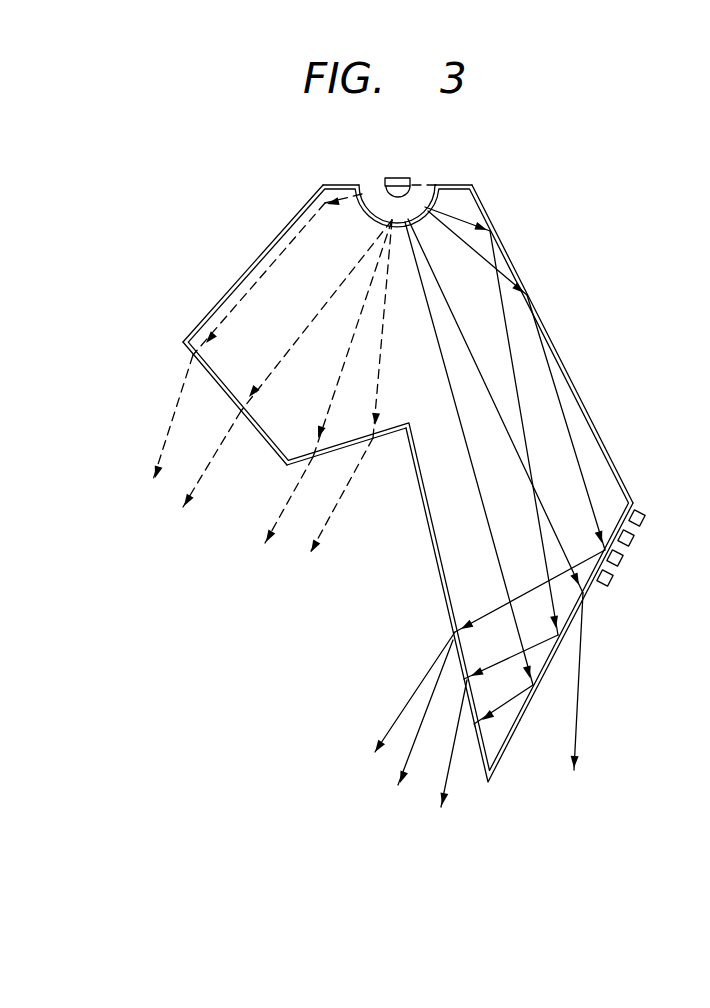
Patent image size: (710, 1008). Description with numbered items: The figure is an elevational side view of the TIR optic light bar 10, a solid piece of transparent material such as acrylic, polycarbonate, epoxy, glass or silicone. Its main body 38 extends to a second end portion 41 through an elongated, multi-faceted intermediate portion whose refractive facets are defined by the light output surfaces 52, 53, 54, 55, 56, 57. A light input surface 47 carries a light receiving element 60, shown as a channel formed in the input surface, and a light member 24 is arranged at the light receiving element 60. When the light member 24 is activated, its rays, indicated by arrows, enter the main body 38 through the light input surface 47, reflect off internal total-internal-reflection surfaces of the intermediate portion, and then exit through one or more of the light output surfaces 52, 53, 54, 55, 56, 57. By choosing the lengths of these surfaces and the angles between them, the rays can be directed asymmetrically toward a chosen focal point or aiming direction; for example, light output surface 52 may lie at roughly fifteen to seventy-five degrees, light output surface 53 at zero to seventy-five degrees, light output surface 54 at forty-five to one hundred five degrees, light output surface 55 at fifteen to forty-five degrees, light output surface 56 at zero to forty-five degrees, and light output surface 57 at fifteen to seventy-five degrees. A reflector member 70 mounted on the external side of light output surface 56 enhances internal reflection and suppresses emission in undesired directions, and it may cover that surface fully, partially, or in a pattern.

The TIR optic light bar 10 is at (577, 254).
The light member 24 is at (400, 177).
The main body 38 is at (570, 357).
The second end portion 41 is at (299, 250).
The light input surface 47 is at (472, 185).
The light output surface 52 is at (250, 265).
The light output surface 53 is at (186, 348).
The light output surface 54 is at (376, 441).
The light output surface 55 is at (444, 612).
The light output surface 56 is at (511, 738).
The light output surface 57 is at (596, 428).
The light receiving element 60 is at (369, 186).
The reflector member 70 is at (630, 535).